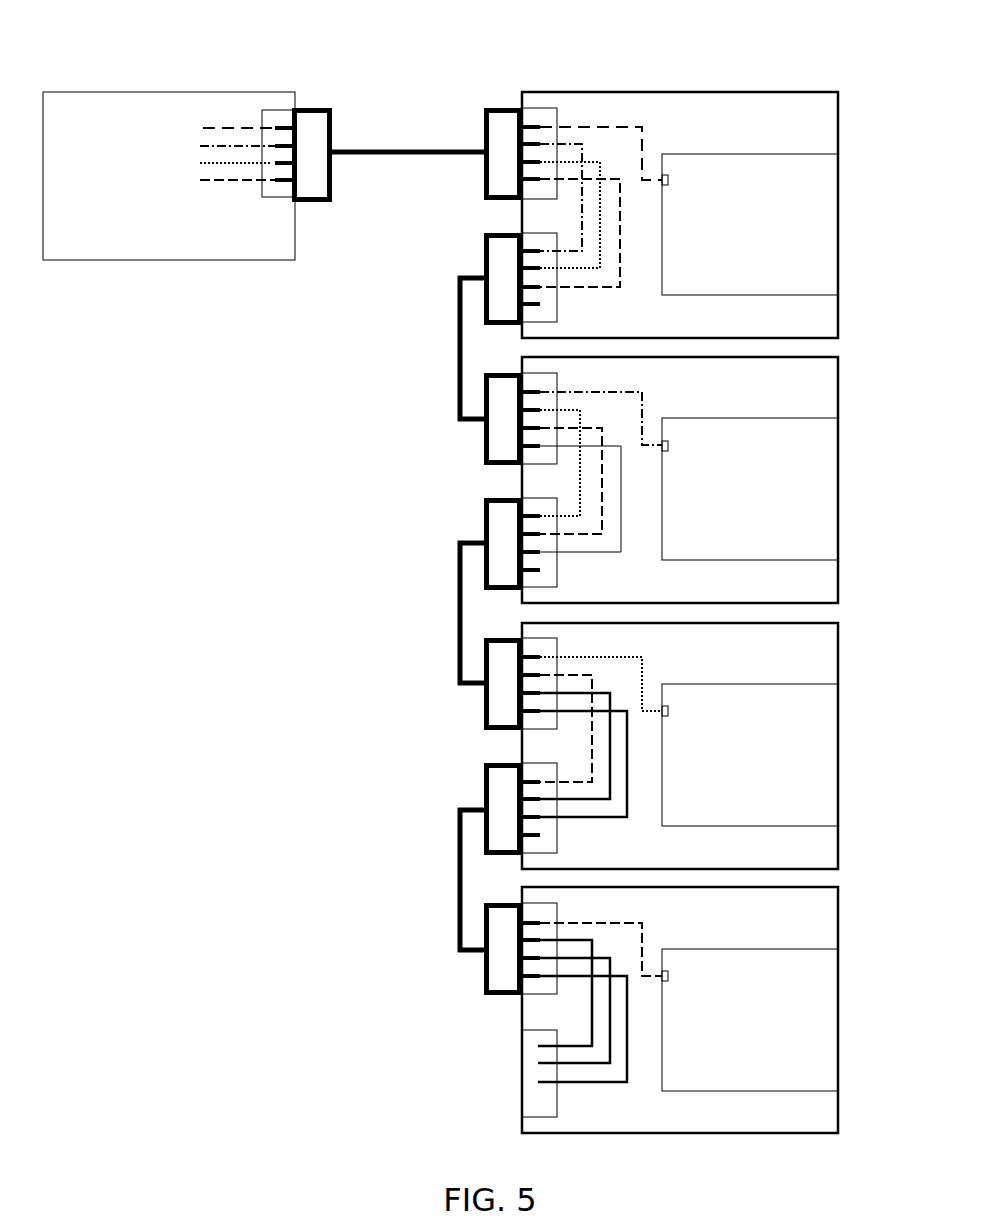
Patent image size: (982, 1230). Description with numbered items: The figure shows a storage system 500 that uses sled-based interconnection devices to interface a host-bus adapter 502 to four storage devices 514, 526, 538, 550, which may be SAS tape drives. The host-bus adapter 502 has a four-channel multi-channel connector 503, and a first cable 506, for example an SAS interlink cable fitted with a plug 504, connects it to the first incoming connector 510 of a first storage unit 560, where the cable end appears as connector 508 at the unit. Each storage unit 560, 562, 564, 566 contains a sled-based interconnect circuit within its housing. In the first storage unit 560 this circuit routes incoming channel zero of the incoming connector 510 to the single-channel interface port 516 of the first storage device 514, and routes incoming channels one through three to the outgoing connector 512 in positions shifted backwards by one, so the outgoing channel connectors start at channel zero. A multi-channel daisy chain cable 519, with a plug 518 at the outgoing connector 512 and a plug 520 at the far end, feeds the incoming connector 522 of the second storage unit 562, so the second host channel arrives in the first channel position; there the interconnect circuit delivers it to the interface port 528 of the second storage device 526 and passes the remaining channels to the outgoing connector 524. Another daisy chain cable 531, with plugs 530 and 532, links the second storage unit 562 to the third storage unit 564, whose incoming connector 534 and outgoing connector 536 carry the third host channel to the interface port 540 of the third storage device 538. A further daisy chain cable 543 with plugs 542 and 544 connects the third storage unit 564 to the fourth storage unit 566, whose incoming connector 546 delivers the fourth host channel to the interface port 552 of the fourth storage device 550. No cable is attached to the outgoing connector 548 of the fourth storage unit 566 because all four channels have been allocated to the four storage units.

The storage system 500 is at (250, 30).
The host-bus adapter 502 is at (100, 92).
The multi-channel connector 503 is at (278, 200).
The plug 504 is at (312, 109).
The first cable 506 is at (368, 156).
The input connector 508 is at (484, 129).
The first incoming connector 510 is at (556, 119).
The outgoing connector 512 is at (556, 318).
The first storage device 514 is at (720, 154).
The interface port 516 is at (668, 180).
The plug 518 is at (484, 255).
The multi-channel cable 519 is at (458, 349).
The plug 520 is at (484, 456).
The incoming connector 522 is at (556, 384).
The output port 524 is at (556, 583).
The second storage device 526 is at (725, 418).
The interface port 528 is at (668, 446).
The plug 530 is at (484, 514).
The multi-channel daisy chain cable 531 is at (458, 611).
The plug 532 is at (484, 718).
The input port 534 is at (556, 649).
The output port 536 is at (556, 848).
The third storage device 538 is at (730, 684).
The interface port 540 is at (668, 711).
The plug 542 is at (484, 781).
The multi-channel daisy chain cable 543 is at (458, 875).
The plug 544 is at (484, 982).
The input port 546 is at (556, 914).
The outgoing connector 548 is at (556, 1112).
The fourth storage device 550 is at (730, 949).
The interface port 552 is at (668, 976).
The first storage unit 560 is at (838, 110).
The second storage unit 562 is at (838, 375).
The third storage unit 564 is at (838, 640).
The fourth storage unit 566 is at (838, 905).